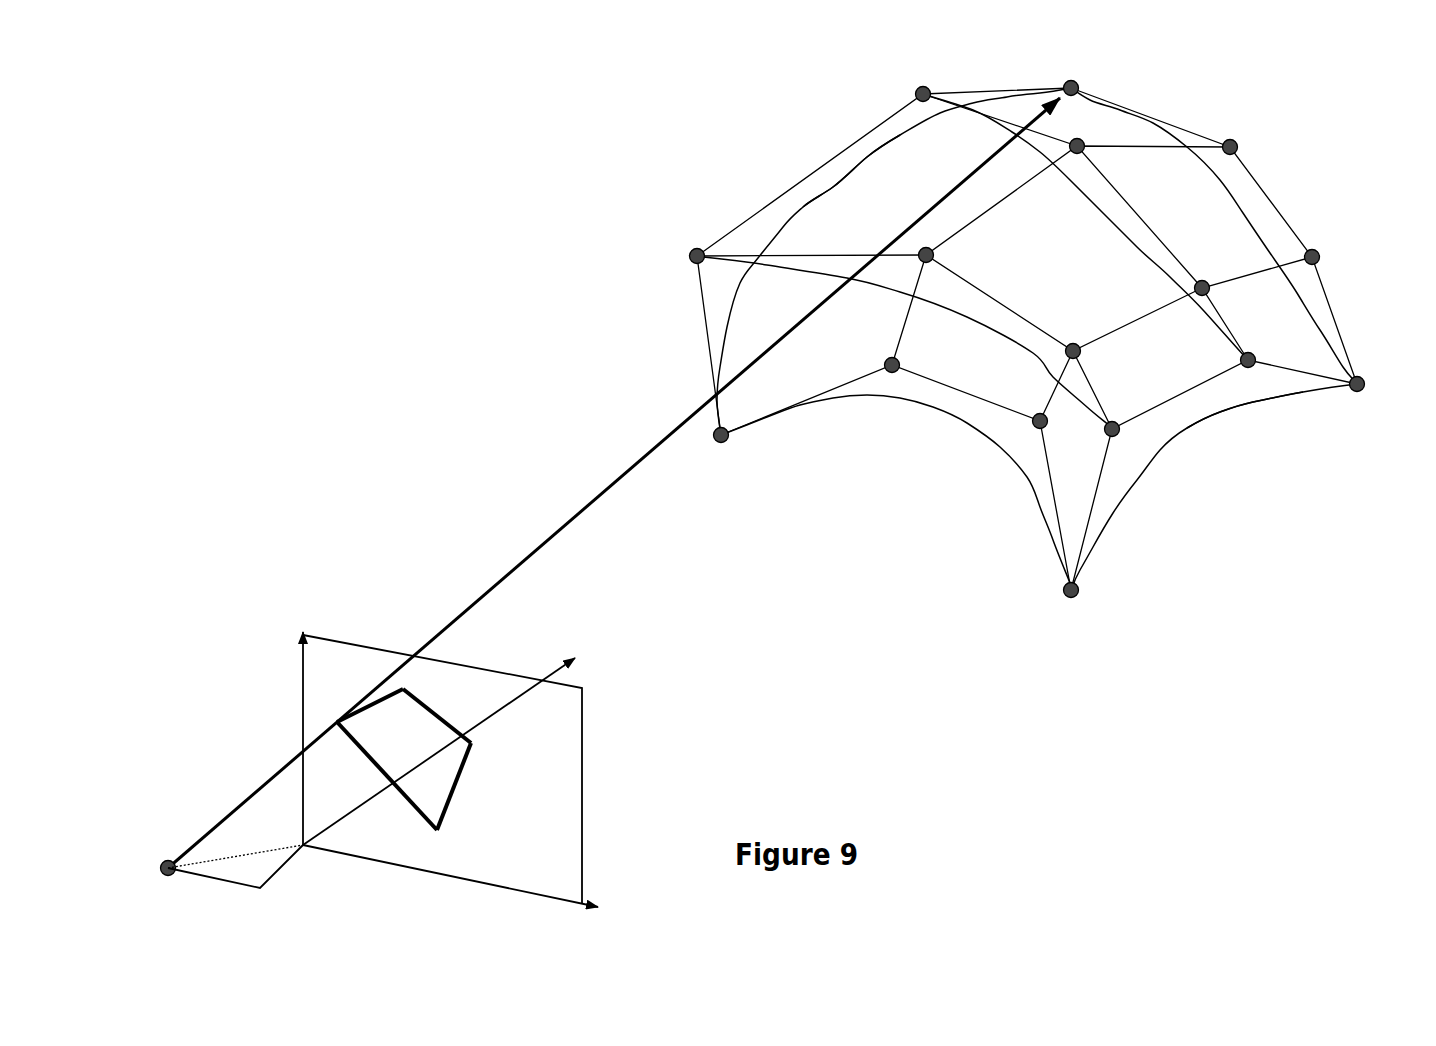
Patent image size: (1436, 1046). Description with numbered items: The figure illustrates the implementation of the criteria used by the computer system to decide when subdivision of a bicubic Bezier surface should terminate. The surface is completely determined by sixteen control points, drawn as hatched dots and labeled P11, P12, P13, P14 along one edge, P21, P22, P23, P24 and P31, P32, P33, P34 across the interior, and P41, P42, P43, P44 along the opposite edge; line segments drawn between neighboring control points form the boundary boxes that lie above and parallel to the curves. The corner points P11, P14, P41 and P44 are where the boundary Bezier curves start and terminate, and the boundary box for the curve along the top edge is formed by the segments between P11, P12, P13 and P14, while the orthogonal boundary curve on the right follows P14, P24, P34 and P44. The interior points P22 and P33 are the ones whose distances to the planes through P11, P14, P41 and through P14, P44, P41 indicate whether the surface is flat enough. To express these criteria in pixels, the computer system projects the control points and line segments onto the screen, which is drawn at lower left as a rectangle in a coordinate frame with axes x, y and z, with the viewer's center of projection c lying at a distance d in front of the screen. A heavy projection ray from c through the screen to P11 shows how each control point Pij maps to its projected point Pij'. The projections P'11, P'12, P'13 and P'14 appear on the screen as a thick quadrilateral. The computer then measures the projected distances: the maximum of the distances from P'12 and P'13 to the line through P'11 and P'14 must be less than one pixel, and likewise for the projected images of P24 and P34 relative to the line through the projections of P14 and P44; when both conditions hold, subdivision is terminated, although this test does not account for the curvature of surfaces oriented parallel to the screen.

The control point P11 is at (1098, 63).
The control point P12 is at (1250, 137).
The control point P13 is at (1332, 261).
The control point P14 is at (1383, 397).
The control point P21 is at (896, 95).
The control point P22 is at (1105, 160).
The control point P23 is at (1223, 298).
The control point P24 is at (1269, 361).
The control point P31 is at (668, 261).
The control point P32 is at (957, 259).
The control point P33 is at (1091, 356).
The control point P34 is at (1133, 435).
The control point P41 is at (694, 438).
The control point P42 is at (919, 361).
The control point P43 is at (1019, 426).
The control point P44 is at (1093, 609).
The projected control point P'11 is at (342, 714).
The projected control point P'12 is at (437, 704).
The projected control point P'13 is at (488, 786).
The projected control point P'14 is at (428, 789).
The center of projection c is at (226, 875).
The distance between center of projection and screen d is at (235, 884).
The x axis x is at (472, 888).
The y axis y is at (318, 727).
The z axis z is at (454, 740).